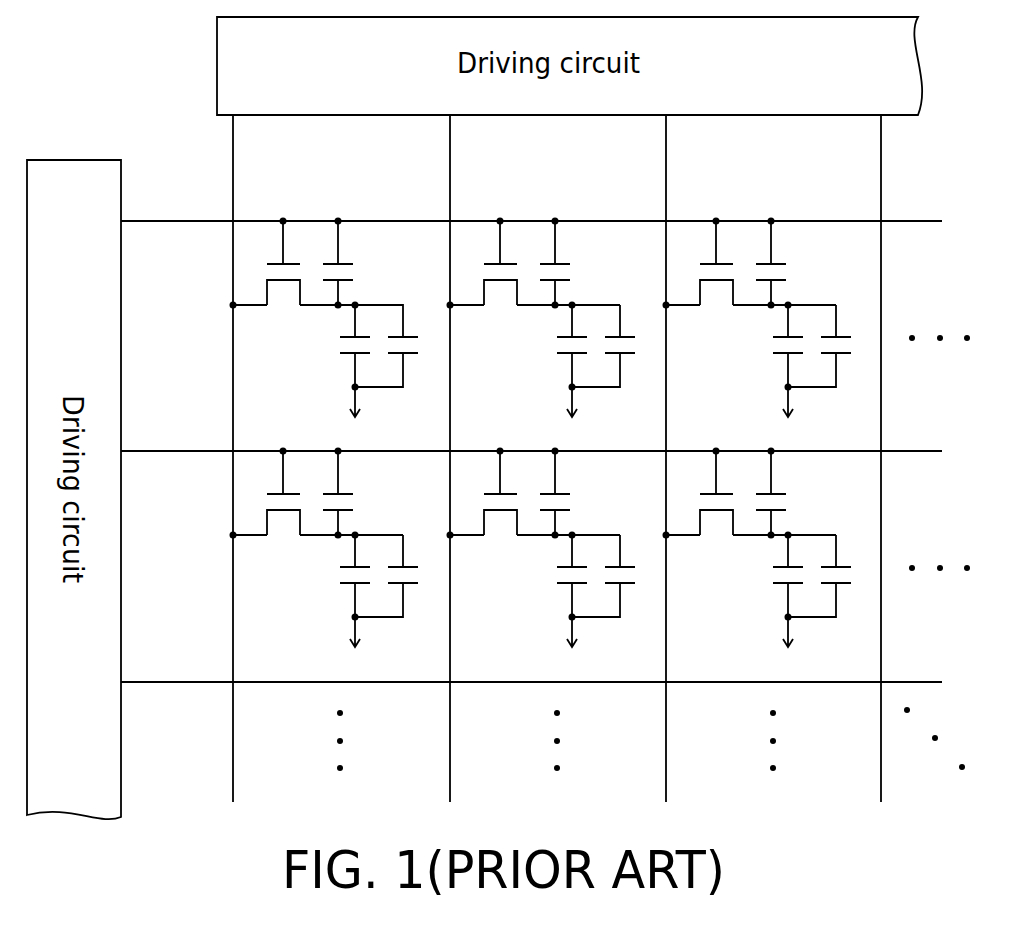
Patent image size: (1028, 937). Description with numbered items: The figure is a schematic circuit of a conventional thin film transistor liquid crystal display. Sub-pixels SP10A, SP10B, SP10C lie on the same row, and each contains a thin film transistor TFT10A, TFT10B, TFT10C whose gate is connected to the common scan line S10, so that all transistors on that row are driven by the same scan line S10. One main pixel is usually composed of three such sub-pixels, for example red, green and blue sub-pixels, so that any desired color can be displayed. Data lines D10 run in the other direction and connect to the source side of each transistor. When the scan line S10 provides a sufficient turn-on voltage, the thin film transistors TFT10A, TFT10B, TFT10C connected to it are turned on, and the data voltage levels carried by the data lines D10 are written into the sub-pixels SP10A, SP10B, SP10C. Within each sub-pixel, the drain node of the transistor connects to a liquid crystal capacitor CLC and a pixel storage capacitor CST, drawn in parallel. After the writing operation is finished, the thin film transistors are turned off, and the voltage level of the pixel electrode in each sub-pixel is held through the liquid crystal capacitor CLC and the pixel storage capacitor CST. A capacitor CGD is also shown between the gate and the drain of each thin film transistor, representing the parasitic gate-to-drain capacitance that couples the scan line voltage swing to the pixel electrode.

The data line D10 is at (881, 178).
The scan line S10 is at (945, 667).
The thin film transistor TFT10A is at (236, 263).
The thin film transistor TFT10B is at (501, 230).
The thin film transistor TFT10C is at (717, 230).
The gate-drain capacitor CGD is at (377, 263).
The liquid crystal capacitor CLC is at (314, 360).
The pixel storage capacitor CST is at (401, 363).
The sub-pixel SP10A is at (288, 334).
The sub-pixel SP10B is at (498, 301).
The sub-pixel SP10C is at (714, 301).